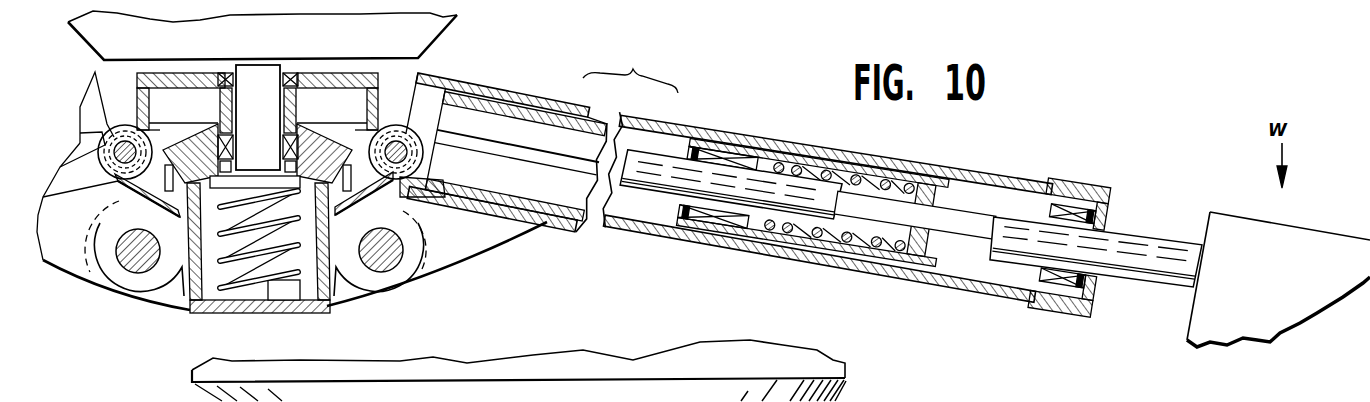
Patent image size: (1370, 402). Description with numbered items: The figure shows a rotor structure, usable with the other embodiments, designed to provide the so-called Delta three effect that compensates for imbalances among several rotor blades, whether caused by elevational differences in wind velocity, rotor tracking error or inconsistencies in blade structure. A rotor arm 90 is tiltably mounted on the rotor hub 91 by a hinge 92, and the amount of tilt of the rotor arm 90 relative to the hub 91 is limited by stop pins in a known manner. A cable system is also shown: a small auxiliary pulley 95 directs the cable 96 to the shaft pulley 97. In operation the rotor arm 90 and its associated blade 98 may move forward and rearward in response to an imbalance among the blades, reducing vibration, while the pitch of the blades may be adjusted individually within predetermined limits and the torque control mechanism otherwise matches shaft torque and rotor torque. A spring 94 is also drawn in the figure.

The rotor arm 90 is at (565, 222).
The rotor hub 91 is at (171, 296).
The hinge 92 is at (134, 268).
The compression spring 94 is at (290, 318).
The auxiliary pulley 95 is at (120, 140).
The cable 96 is at (100, 133).
The shaft pulley 97 is at (320, 155).
The blade 98 is at (1218, 332).